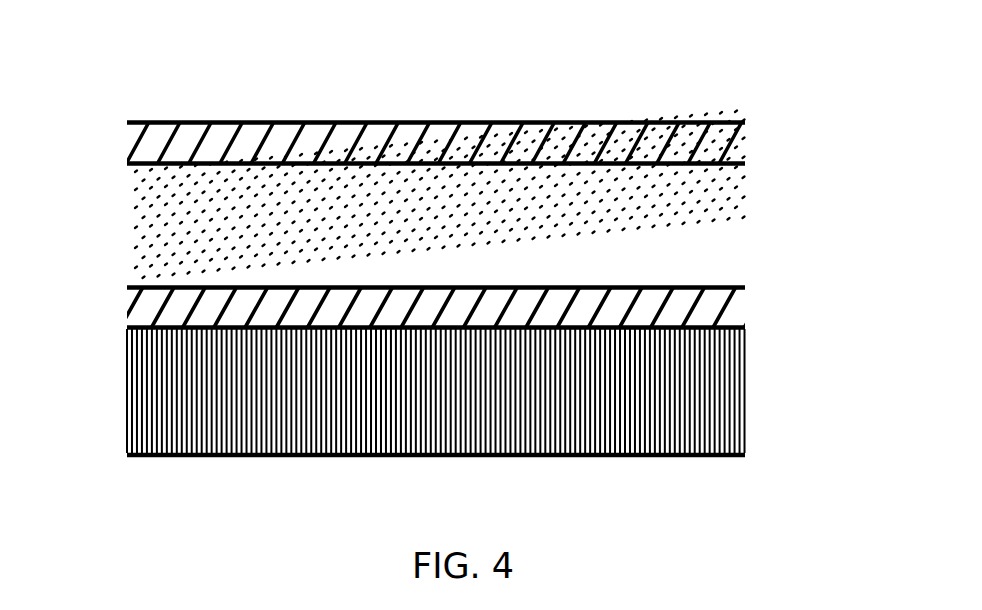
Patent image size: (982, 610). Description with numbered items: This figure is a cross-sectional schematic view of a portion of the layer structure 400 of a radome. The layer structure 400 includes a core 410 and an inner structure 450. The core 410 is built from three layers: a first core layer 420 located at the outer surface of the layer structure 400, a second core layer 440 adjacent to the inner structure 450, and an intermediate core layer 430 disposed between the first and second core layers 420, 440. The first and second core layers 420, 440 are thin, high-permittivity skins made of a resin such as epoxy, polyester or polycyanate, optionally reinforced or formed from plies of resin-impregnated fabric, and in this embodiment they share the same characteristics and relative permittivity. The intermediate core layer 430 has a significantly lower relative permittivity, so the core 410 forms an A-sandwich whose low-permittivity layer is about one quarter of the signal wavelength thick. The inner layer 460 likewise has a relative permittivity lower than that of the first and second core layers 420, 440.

The layer structure 400 is at (668, 63).
The core 410 is at (768, 122).
The first core layer 420 is at (193, 150).
The intermediate core layer 430 is at (192, 217).
The second core layer 440 is at (188, 299).
The inner structure 450 is at (770, 328).
The inner layer 460 is at (556, 420).